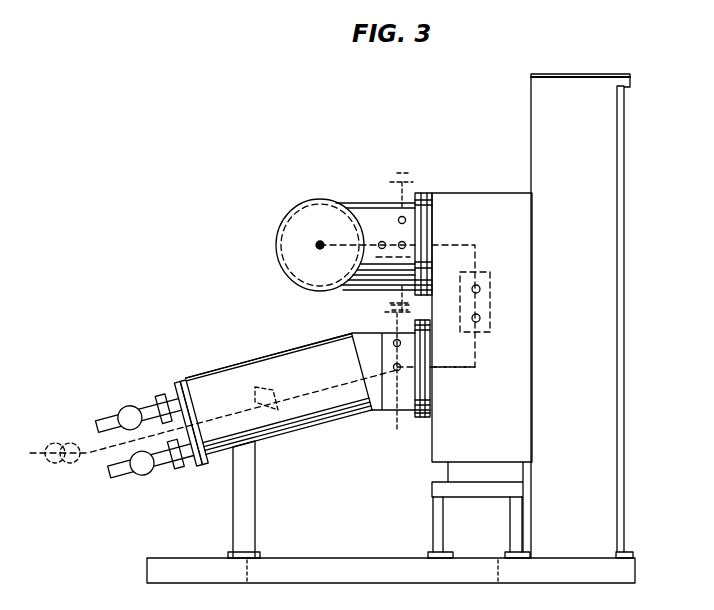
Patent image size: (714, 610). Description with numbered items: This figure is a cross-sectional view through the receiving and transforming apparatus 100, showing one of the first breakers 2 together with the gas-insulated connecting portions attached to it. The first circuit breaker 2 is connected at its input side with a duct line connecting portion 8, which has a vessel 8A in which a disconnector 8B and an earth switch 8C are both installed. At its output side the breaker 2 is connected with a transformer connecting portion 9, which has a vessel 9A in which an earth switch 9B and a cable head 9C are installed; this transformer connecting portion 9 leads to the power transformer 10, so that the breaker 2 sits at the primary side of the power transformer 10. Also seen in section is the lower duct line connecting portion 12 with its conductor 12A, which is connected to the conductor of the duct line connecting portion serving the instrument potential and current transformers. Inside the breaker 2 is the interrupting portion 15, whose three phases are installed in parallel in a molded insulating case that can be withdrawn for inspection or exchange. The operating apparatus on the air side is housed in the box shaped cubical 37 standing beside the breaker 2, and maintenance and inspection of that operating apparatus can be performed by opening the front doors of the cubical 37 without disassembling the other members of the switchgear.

The receiving and transforming apparatus 100 is at (168, 95).
The box shaped cubical 37 is at (553, 74).
The first breaker 2 is at (500, 190).
The duct line connecting portion 8 is at (424, 186).
The vessel 8A is at (398, 200).
The disconnector 8B is at (385, 228).
The earth switch 8C is at (397, 173).
The lower duct line connecting portion 12 is at (274, 245).
The conductor 12A is at (320, 245).
The interrupting portion 15 is at (490, 303).
The transformer connecting portion 9 is at (313, 437).
The vessel 9A is at (268, 362).
The earth switch 9B is at (391, 384).
The cable head 9C is at (255, 387).
The power transformer 10 is at (63, 442).